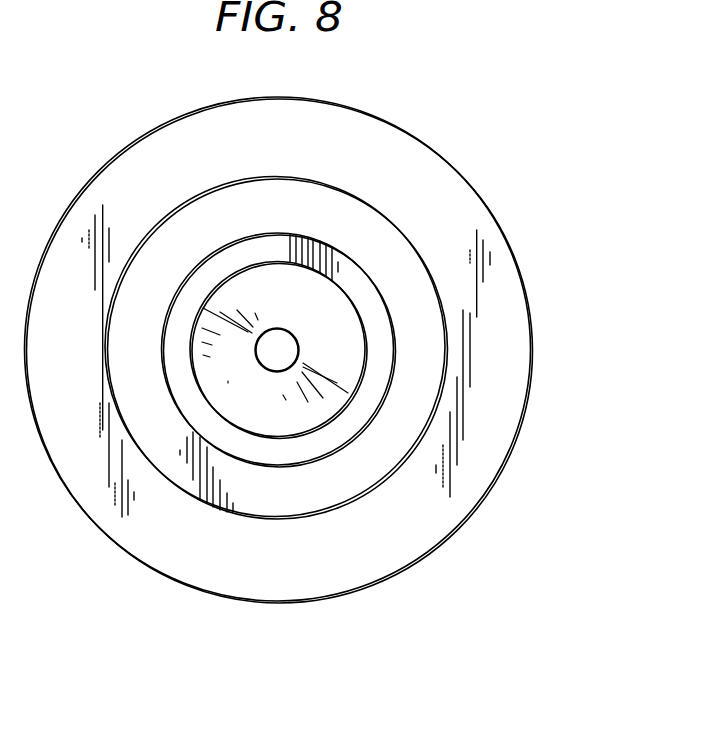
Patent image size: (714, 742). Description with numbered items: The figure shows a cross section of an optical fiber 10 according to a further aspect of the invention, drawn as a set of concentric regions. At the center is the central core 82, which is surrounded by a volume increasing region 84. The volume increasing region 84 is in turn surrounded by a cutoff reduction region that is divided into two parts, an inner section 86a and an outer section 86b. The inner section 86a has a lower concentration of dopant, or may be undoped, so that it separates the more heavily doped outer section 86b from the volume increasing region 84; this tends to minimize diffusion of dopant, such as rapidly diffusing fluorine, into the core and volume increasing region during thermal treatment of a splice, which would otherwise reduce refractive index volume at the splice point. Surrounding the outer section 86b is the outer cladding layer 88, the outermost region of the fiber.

The device 10 is at (492, 165).
The central core 82 is at (290, 363).
The volume increasing region 84 is at (343, 331).
The inner section of cutoff reduction region 86a is at (333, 432).
The outer section of cutoff reduction region 86b is at (439, 365).
The outer cladding layer 88 is at (503, 365).